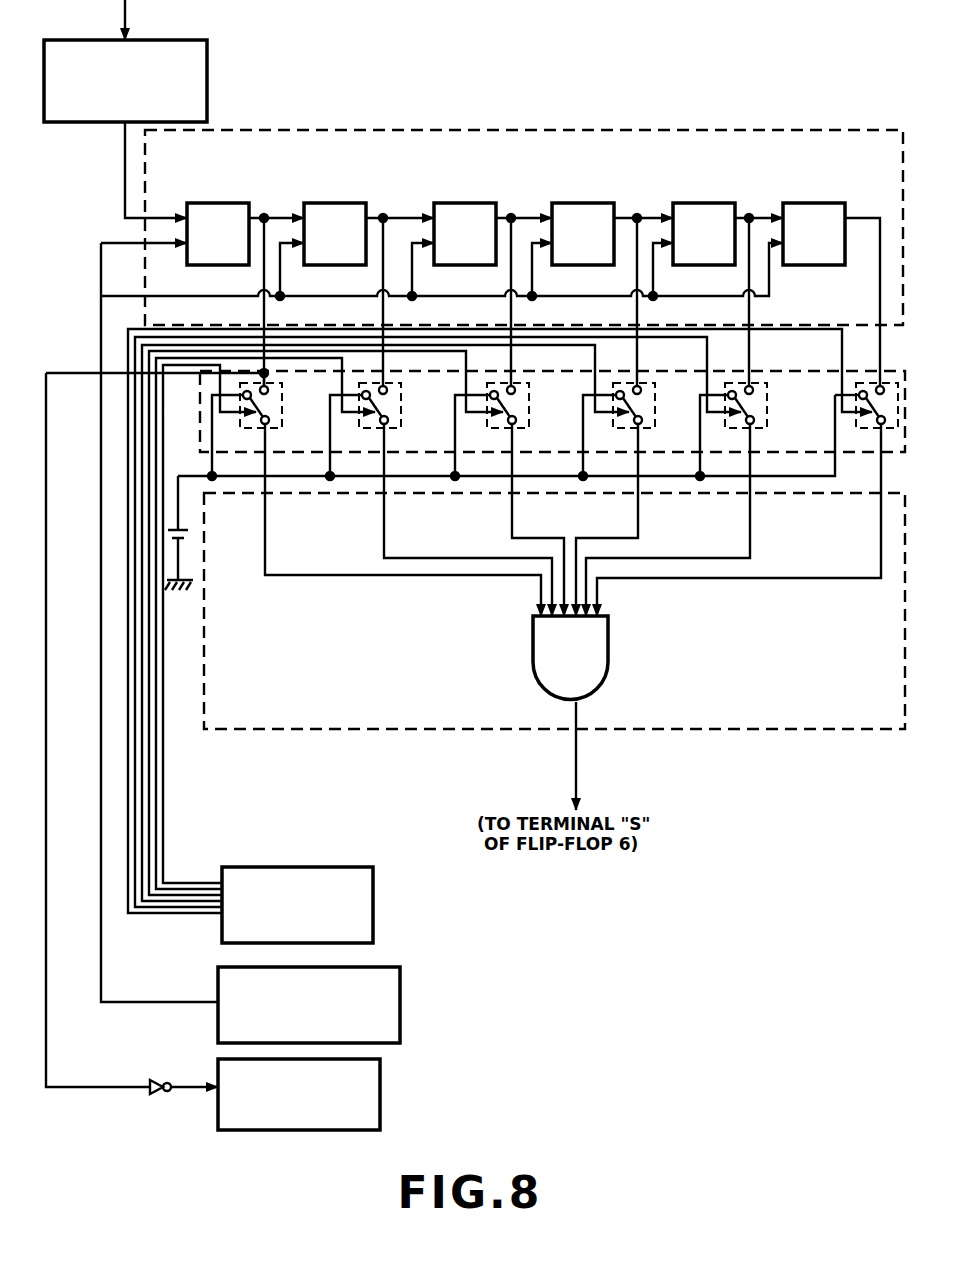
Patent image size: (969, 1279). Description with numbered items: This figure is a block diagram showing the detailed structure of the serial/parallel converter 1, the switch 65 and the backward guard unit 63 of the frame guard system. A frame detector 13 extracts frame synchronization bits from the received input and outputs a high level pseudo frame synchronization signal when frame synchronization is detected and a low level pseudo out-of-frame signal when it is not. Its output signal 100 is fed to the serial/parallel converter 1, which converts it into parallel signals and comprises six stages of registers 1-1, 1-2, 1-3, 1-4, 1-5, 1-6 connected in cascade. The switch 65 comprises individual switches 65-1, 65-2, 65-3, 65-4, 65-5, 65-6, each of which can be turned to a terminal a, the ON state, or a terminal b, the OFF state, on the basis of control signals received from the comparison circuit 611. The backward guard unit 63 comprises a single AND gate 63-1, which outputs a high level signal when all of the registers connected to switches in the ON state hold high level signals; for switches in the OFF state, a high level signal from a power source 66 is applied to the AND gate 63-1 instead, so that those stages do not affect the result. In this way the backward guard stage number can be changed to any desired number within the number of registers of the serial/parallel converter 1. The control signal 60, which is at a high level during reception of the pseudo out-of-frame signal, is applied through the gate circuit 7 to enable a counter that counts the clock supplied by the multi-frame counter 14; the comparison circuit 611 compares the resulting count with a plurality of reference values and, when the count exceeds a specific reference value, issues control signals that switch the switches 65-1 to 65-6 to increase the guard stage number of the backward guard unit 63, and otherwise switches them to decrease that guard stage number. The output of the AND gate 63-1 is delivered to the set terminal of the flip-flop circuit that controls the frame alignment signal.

The frame detector 13 is at (207, 90).
The serial/parallel converter 1 is at (300, 130).
The output signal 100 is at (136, 216).
The register 1-1 is at (222, 203).
The register 1-2 is at (336, 203).
The register 1-3 is at (466, 203).
The register 1-4 is at (586, 203).
The register 1-5 is at (708, 203).
The register 1-6 is at (814, 203).
The switch 65 is at (203, 432).
The switch 65-1 is at (268, 424).
The switch 65-2 is at (387, 424).
The switch 65-3 is at (515, 424).
The switch 65-4 is at (641, 424).
The switch 65-5 is at (782, 402).
The switch 65-6 is at (856, 428).
The power source 66 is at (188, 531).
The backward guard unit 63 is at (240, 729).
The AND gate 63-1 is at (609, 657).
The comparison circuit 611 is at (373, 912).
The multi-frame counter 14 is at (400, 1012).
The gate circuit 7 is at (380, 1087).
The control signal 60 is at (97, 1087).